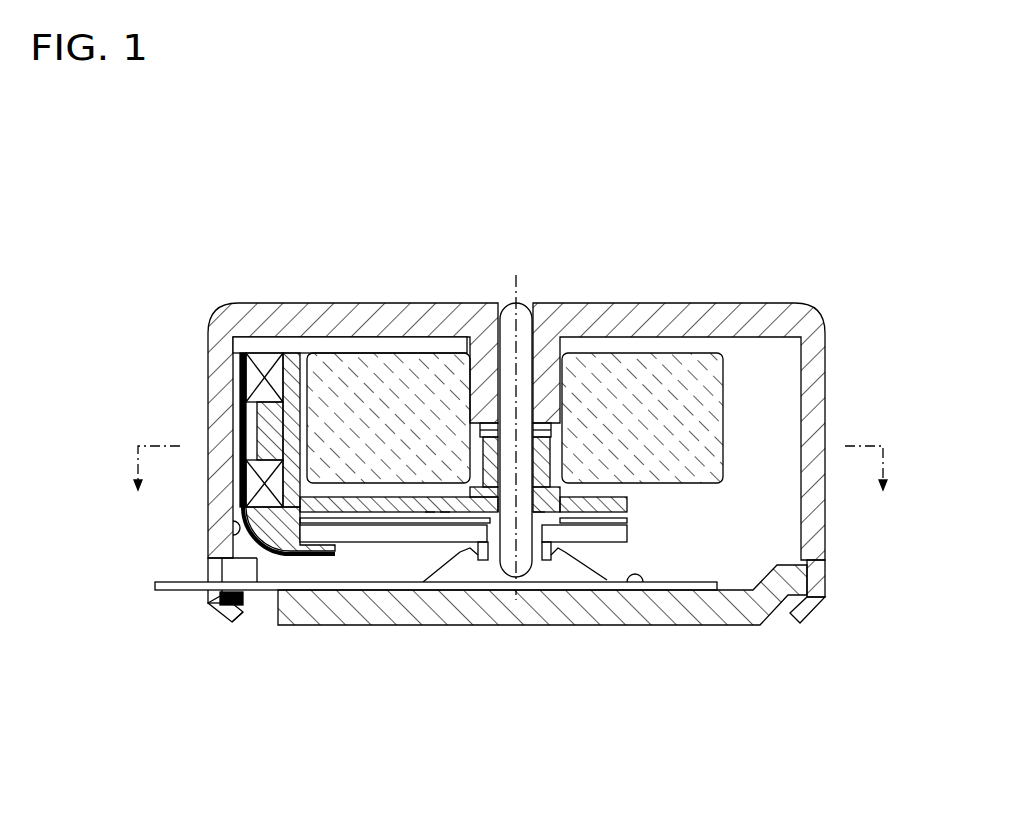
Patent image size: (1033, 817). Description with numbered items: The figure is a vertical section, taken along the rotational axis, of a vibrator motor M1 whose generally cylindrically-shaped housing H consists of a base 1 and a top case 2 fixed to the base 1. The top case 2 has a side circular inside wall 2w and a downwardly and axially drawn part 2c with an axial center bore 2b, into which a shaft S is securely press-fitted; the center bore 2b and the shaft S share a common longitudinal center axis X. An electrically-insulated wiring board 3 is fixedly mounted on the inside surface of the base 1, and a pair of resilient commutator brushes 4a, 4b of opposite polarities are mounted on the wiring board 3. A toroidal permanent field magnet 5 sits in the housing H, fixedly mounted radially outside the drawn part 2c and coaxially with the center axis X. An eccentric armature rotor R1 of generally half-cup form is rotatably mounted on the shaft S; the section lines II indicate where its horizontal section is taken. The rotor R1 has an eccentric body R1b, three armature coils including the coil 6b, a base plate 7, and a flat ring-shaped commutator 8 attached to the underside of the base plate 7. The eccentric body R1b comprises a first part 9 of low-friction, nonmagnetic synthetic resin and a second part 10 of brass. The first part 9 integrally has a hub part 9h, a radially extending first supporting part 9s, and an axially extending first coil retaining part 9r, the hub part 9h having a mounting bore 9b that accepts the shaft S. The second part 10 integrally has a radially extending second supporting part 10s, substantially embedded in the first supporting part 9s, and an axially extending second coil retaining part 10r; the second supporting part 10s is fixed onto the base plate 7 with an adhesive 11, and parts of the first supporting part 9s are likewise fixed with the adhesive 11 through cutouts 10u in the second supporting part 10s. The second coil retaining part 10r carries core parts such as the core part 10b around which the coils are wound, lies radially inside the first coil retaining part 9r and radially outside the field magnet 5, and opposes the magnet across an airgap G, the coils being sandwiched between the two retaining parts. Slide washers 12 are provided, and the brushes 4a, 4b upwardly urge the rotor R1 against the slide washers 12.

The base 1 is at (718, 605).
The top case 2 is at (740, 322).
The axial center bore 2b is at (540, 325).
The downwardly and axially drawn part 2c is at (545, 365).
The side circular inside wall 2w is at (233, 527).
The electrically-insulated wiring board 3 is at (657, 587).
The resilient commutator brush 4a is at (455, 565).
The resilient commutator brush 4b is at (585, 572).
The toroidal permanent field magnet 5 is at (377, 373).
The armature coil 6b is at (263, 362).
The base plate 7 is at (322, 540).
The flat ring-shaped commutator 8 is at (618, 583).
The first part 9 is at (263, 542).
The mounting bore 9b is at (520, 556).
The hub part 9h is at (500, 505).
The first coil retaining part 9r is at (250, 445).
The first supporting part 9s is at (444, 505).
The second part 10 is at (232, 615).
The core part 10b is at (250, 407).
The second coil retaining part 10r is at (290, 348).
The second supporting part 10s is at (430, 518).
The cutouts 10u is at (375, 523).
The adhesive 11 is at (340, 546).
The slide washers 12 is at (560, 432).
The shaft S is at (503, 310).
The longitudinal center axis X is at (518, 419).
The airgap G is at (308, 373).
The housing H is at (832, 360).
The vibrator motor M1 is at (203, 307).
The eccentric armature rotor R1 is at (292, 370).
The eccentric body R1b is at (489, 568).
The section lines II— II is at (509, 486).